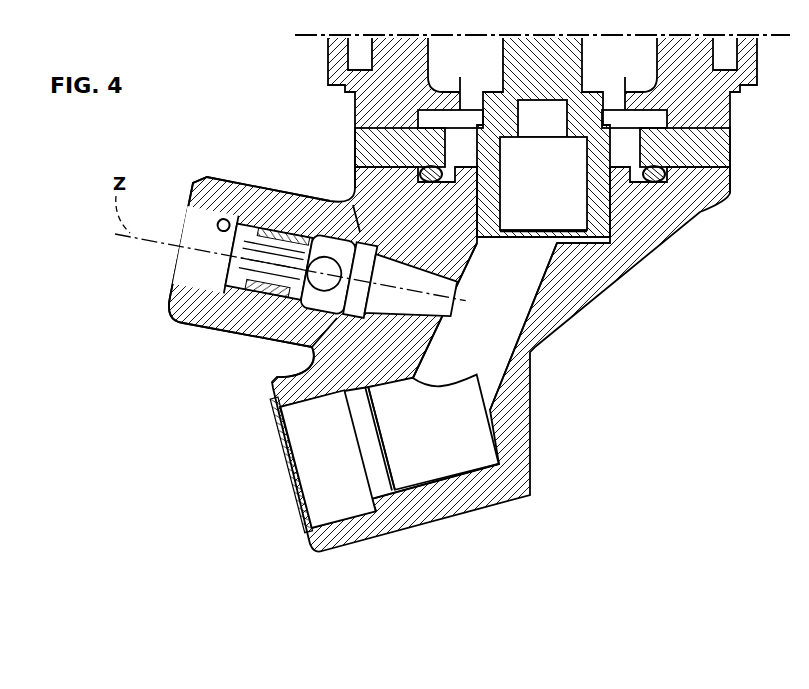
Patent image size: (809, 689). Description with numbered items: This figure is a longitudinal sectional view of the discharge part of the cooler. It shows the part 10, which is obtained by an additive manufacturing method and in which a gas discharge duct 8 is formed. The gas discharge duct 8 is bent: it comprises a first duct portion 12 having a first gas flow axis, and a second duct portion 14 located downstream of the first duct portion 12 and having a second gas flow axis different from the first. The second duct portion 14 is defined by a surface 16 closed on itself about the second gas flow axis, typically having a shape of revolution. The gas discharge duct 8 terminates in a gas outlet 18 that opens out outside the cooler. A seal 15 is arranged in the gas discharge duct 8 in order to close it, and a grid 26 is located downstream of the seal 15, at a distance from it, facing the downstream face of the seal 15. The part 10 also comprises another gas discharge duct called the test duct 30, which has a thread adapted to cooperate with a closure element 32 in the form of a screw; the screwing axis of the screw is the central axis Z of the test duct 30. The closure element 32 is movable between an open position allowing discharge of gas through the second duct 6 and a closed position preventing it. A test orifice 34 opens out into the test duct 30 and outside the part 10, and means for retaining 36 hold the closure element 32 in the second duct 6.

The second duct 6 is at (549, 76).
The gas discharge duct 8 is at (540, 343).
The part 10 is at (403, 547).
The first duct portion 12 is at (476, 316).
The second duct portion 14 is at (440, 446).
The seal 15 is at (388, 448).
The surface 16 is at (452, 474).
The gas outlet 18 is at (256, 496).
The grid 26 is at (281, 440).
The test duct 30 is at (348, 256).
The closure element 32 is at (265, 308).
The test orifice 34 is at (308, 355).
The means for retaining 36 is at (222, 218).